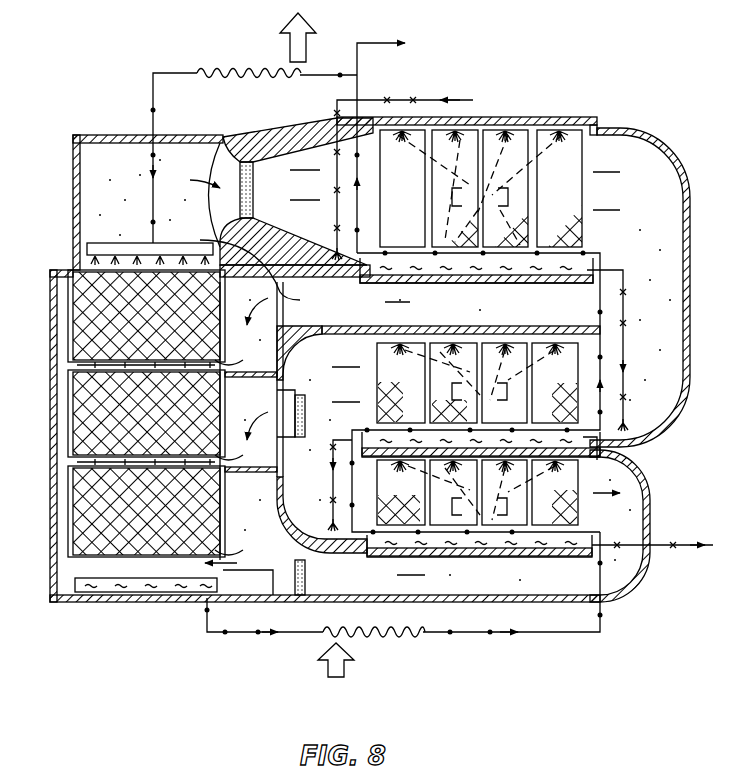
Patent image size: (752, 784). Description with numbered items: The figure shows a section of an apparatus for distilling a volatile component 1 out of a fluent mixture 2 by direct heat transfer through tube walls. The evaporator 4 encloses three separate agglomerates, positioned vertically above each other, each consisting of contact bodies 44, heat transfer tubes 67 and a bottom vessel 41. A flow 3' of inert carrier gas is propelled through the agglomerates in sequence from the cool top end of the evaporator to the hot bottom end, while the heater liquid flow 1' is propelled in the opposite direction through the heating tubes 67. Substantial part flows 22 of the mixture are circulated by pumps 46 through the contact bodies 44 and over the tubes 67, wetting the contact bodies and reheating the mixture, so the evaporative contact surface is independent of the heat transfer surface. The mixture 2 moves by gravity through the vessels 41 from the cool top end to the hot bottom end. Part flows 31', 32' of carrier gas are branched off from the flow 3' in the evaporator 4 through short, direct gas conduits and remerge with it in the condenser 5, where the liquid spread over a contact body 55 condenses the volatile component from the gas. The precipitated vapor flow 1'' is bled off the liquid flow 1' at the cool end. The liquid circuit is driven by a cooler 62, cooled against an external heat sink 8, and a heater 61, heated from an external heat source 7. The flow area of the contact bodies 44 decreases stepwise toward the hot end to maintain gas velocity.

The volatile component 1 is at (146, 603).
The liquid flow 1' is at (385, 374).
The vapor flow 1'' is at (476, 274).
The fluent mixture 2 is at (455, 98).
The carrier gas flow 3' is at (444, 364).
The evaporator 4 is at (660, 150).
The condenser 5 is at (103, 133).
The external heat source 7 is at (308, 48).
The external heat sink 8 is at (326, 668).
The part flows of the mixture 22 is at (545, 96).
The part flow of carrier gas 31' is at (312, 331).
The part flow of carrier gas 32' is at (243, 471).
The bottom vessel 41 is at (535, 281).
The contact bodies 44 is at (478, 165).
The pumps 46 is at (512, 198).
The contact body 55 is at (156, 327).
The heater 61 is at (382, 638).
The cooler 62 is at (233, 67).
The heat transfer tubes 67 is at (490, 280).